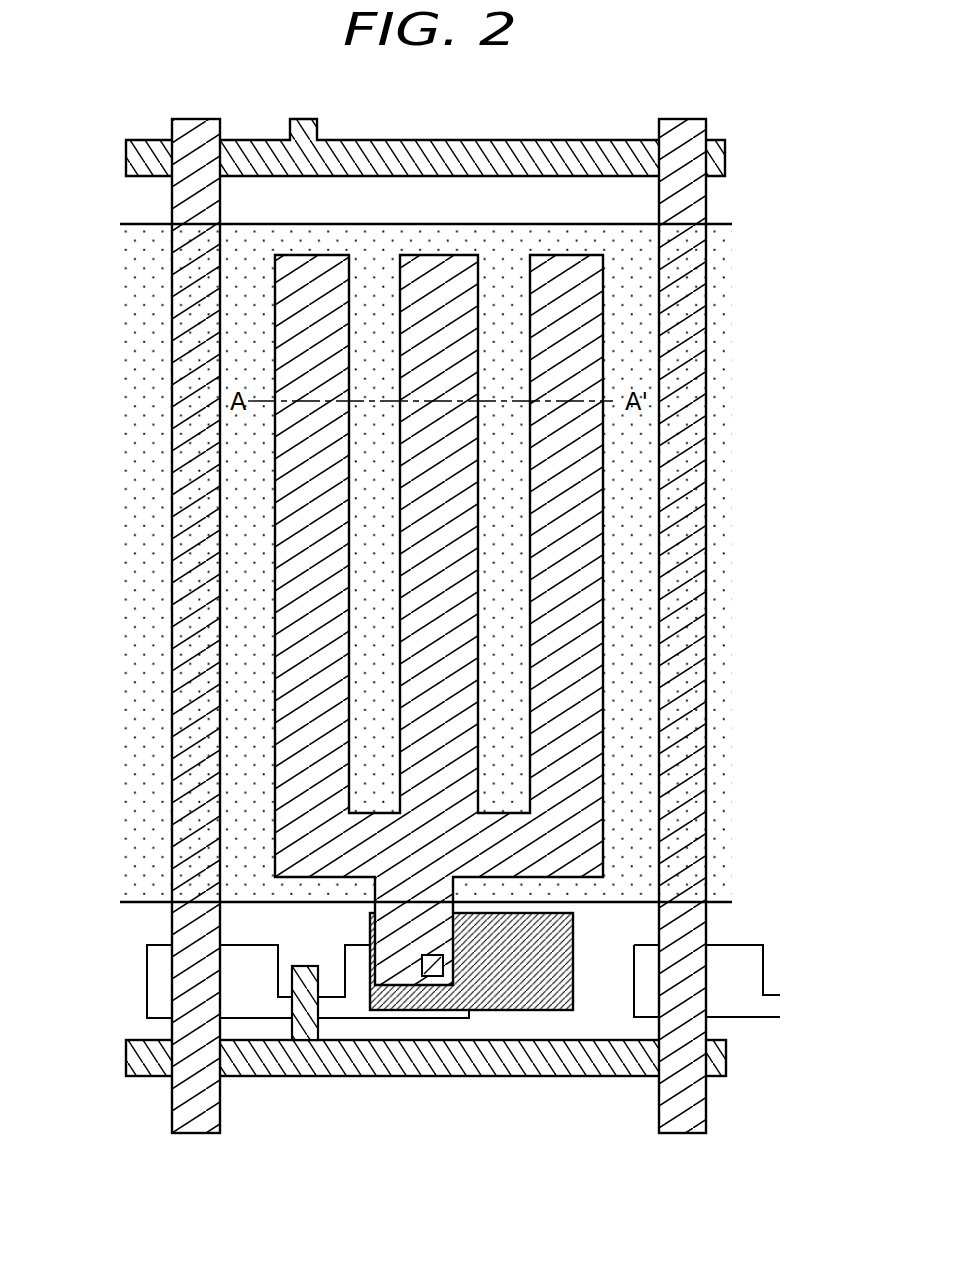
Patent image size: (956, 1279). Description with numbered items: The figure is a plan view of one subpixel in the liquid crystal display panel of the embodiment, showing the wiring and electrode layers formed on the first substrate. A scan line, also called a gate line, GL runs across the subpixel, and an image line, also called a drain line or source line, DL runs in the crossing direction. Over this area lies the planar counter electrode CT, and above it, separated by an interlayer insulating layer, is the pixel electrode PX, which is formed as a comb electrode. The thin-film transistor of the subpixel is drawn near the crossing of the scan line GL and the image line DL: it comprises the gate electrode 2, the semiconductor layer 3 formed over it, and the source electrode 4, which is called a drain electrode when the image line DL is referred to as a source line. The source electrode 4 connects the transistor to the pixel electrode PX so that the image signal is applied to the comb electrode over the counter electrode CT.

The gate electrode 2 is at (305, 972).
The semiconductor layer 3 is at (162, 965).
The source electrode 4 is at (457, 1001).
The image line DL is at (215, 1118).
The scan line GL is at (525, 1072).
The pixel electrode PX is at (582, 540).
The counter electrode CT is at (638, 759).